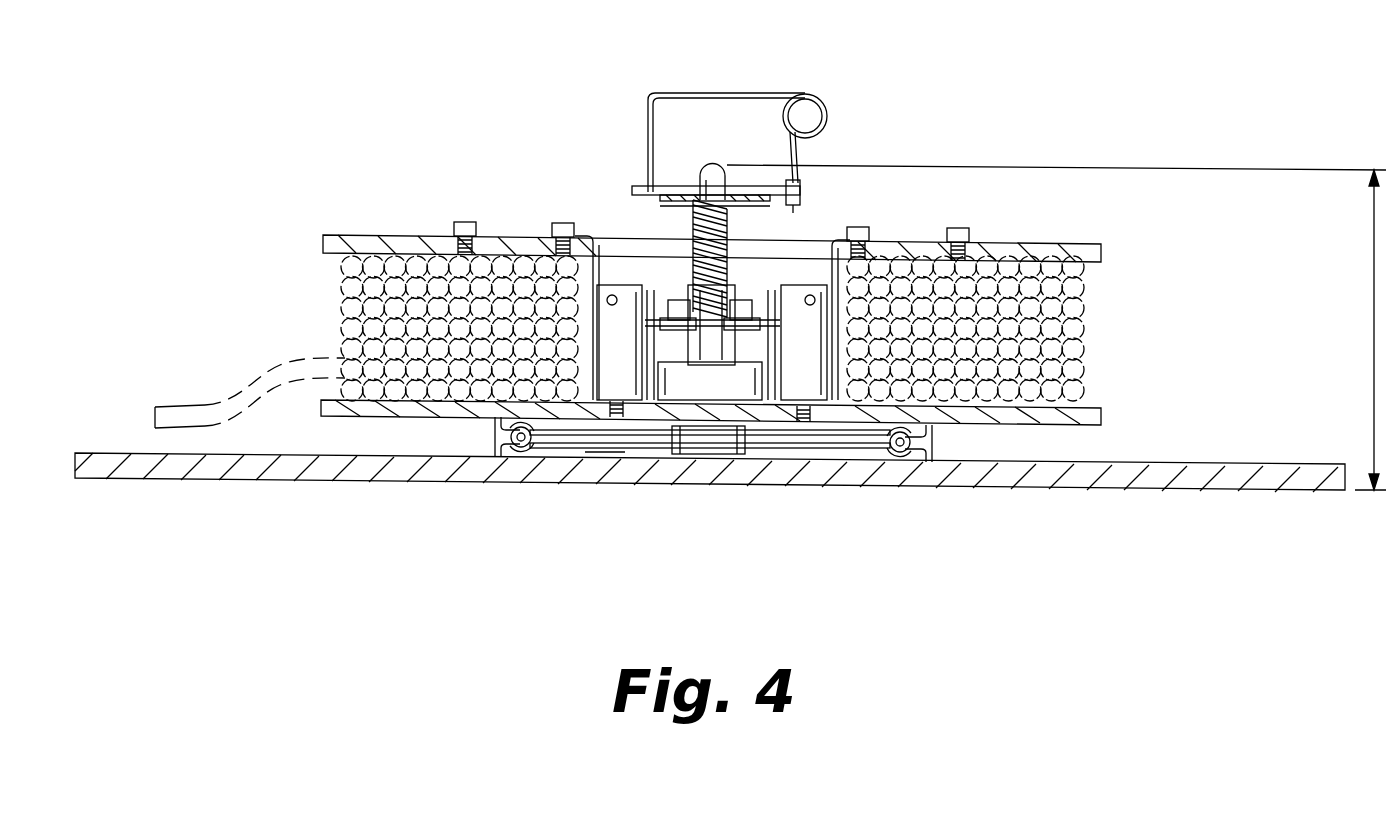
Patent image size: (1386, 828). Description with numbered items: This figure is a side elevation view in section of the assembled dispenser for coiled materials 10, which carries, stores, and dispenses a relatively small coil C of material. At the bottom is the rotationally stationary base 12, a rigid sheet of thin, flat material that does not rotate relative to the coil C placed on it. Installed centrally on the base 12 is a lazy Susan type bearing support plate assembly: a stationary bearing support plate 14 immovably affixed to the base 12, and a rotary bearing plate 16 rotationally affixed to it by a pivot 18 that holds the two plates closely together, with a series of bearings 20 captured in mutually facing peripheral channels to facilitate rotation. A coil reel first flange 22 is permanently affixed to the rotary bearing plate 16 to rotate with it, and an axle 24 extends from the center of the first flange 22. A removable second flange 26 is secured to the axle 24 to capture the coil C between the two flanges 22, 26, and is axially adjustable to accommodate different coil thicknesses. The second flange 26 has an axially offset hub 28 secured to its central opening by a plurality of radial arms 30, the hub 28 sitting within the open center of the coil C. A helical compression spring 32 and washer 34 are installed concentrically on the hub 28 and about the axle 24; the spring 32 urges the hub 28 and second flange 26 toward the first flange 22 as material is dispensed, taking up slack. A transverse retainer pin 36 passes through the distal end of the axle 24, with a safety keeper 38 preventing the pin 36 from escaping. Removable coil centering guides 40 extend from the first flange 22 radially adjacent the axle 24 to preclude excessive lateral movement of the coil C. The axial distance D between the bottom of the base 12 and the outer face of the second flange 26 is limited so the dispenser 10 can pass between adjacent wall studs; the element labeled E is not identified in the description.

The dispenser for coiled materials 10 is at (356, 608).
The base 12 is at (245, 478).
The stationary bearing support plate 14 is at (605, 452).
The rotary bearing plate 16 is at (935, 442).
The pivot 18 is at (700, 455).
The bearings 20 is at (495, 437).
The coil reel first flange 22 is at (1101, 412).
The axle 24 is at (713, 165).
The second flange 26 is at (1101, 246).
The axially offset hub 28 is at (690, 300).
The radial arms 30 is at (652, 292).
The helical compression spring 32 is at (728, 225).
The washer 34 is at (650, 212).
The transverse retainer pin 36 is at (802, 192).
The safety keeper 38 is at (728, 92).
The coil centering guides 40 is at (605, 375).
The coil of material C is at (345, 305).
The axial span or distance D is at (1374, 330).
The electrical wire E is at (163, 405).